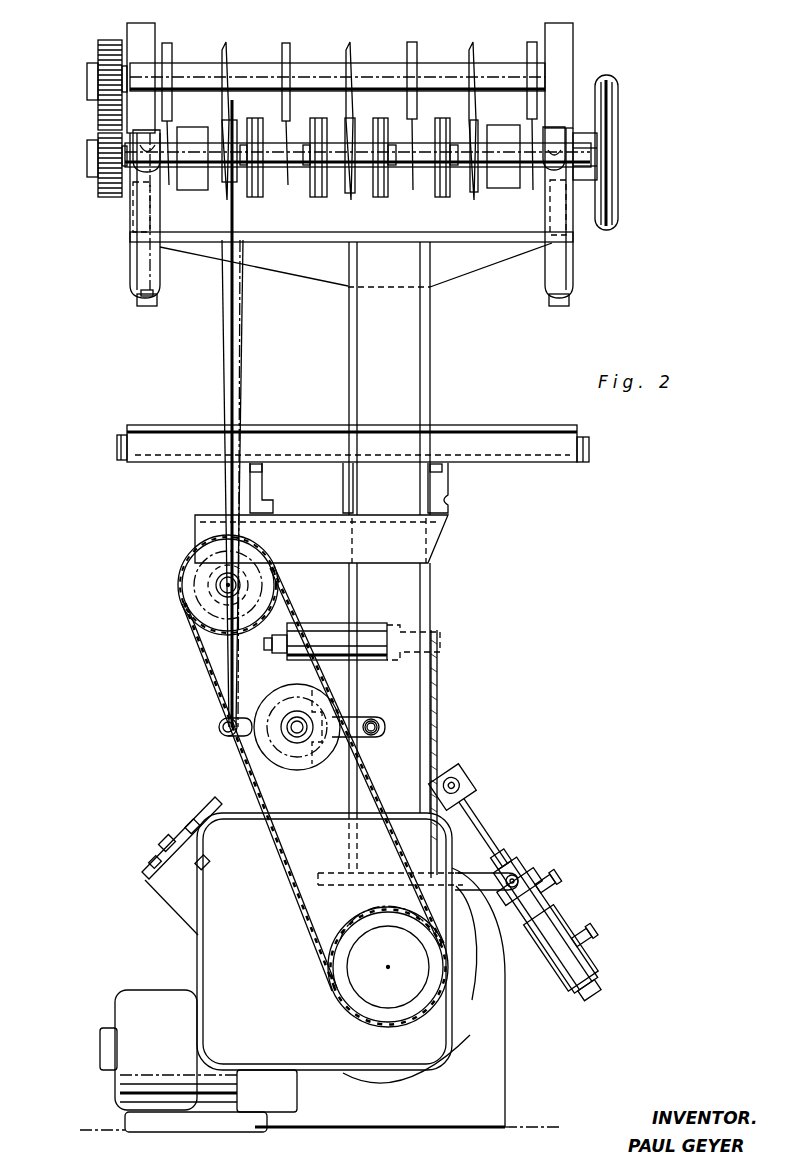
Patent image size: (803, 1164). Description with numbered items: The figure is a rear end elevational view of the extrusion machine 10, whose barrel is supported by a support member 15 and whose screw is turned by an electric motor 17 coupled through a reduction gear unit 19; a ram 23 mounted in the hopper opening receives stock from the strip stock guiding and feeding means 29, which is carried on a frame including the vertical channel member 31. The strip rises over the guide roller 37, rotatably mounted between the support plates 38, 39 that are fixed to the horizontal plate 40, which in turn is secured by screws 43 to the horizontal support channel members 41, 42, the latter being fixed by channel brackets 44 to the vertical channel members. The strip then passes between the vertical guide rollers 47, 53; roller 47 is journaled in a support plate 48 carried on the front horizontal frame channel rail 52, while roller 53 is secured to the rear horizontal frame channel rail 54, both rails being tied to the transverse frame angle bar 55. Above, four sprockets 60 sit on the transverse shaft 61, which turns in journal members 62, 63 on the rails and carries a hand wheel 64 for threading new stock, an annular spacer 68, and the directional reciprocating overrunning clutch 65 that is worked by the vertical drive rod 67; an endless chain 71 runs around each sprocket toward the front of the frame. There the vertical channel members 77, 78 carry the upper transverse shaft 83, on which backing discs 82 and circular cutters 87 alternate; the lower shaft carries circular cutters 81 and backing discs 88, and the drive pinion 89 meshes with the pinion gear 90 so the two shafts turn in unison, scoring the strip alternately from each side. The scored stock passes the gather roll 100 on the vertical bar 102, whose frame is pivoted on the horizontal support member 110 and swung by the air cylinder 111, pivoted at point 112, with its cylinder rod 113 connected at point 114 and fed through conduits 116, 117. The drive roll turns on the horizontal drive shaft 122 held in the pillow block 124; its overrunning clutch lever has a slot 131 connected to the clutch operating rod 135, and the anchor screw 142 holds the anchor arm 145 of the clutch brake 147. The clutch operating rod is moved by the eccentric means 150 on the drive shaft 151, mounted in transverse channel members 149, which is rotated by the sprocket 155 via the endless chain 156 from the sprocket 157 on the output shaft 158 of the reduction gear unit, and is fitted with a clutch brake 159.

The extrusion machine 10 is at (487, 978).
The support member 15 is at (478, 1095).
The electric motor 17 is at (130, 1000).
The reduction gear unit 19 is at (215, 944).
The ram 23 is at (211, 806).
The strip stock guiding and feeding means 29 is at (190, 367).
The vertical channel member 31 is at (400, 358).
The guide roller 37 is at (478, 425).
The support plate 38 is at (117, 445).
The support plate 39 is at (590, 444).
The horizontal plate 40 is at (122, 462).
The horizontal support channel member 41 is at (432, 499).
The horizontal support channel member 42 is at (262, 490).
The screws 43 is at (250, 470).
The channel brackets 44 is at (320, 494).
The vertical guide roller 47 is at (132, 268).
The support plate 48 is at (140, 305).
The front horizontal frame channel rail 52 is at (140, 213).
The vertical guide roller 53 is at (573, 262).
The rear horizontal frame channel rail 54 is at (533, 225).
The transverse frame angle bar 55 is at (456, 268).
The sprockets 60 is at (252, 195).
The transverse shaft 61 is at (321, 242).
The journal member 62 is at (133, 142).
The journal member 63 is at (575, 138).
The hand wheel 64 is at (618, 165).
The directional reciprocating overrunning clutch 65 is at (196, 185).
The drive rod 67 is at (236, 318).
The annular spacer 68 is at (503, 125).
The endless chain 71 is at (258, 118).
The vertical channel member 77 is at (565, 46).
The vertical channel member 78 is at (127, 36).
The circular cutters 81 is at (170, 186).
The backing discs 82 is at (172, 58).
The transverse shaft 83 is at (310, 62).
The circular cutters 87 is at (227, 52).
The backing discs 88 is at (222, 125).
The drive pinion 89 is at (98, 172).
The pinion gear 90 is at (98, 60).
The gather roll 100 is at (312, 630).
The vertical bar 102 is at (440, 738).
The horizontal support member 110 is at (522, 862).
The air cylinder 111 is at (590, 920).
The pivot point 112 is at (560, 876).
The cylinder rod 113 is at (486, 830).
The pivot point 114 is at (462, 784).
The conduit 116 is at (566, 882).
The conduit 117 is at (600, 940).
The horizontal drive shaft 122 is at (294, 722).
The pillow block 124 is at (340, 702).
The slot 131 is at (220, 733).
The clutch operating rod 135 is at (228, 673).
The elongated screw 142 is at (392, 722).
The anchor arm 145 is at (378, 736).
The clutch brake 147 is at (291, 762).
The transverse channel members 149 is at (200, 527).
The eccentric means 150 is at (205, 612).
The drive shaft 151 is at (216, 582).
The sprocket 155 is at (195, 592).
The endless chain 156 is at (293, 895).
The sprocket 157 is at (345, 985).
The output shaft 158 is at (375, 990).
The clutch brake 159 is at (210, 630).